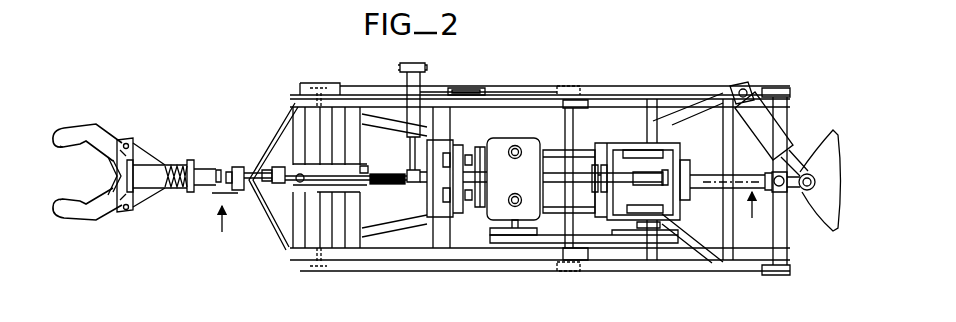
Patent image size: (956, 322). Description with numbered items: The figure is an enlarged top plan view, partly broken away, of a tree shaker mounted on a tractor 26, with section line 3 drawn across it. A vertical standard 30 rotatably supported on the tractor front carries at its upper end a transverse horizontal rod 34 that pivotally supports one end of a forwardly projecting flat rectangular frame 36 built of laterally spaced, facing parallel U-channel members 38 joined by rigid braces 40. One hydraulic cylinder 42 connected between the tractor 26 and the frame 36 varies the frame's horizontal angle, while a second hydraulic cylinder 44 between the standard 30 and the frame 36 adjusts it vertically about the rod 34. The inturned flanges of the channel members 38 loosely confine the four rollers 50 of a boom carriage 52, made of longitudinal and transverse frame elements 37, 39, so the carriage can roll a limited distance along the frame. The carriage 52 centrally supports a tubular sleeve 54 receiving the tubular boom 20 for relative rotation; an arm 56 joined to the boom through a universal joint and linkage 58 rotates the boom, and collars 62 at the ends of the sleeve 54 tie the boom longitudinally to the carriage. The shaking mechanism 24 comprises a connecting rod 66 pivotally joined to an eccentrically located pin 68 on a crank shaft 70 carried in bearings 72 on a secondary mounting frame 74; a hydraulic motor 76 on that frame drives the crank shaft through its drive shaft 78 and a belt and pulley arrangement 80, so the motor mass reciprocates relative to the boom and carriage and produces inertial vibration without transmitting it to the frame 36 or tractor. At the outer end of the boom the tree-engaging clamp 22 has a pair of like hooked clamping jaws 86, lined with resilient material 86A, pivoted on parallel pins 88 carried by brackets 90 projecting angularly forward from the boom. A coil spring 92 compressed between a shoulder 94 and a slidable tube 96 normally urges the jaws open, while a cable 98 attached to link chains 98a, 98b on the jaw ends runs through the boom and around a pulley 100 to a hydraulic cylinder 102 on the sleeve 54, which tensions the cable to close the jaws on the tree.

The section line 3- 3 is at (486, 212).
The boom 20 is at (163, 167).
The tree-engaging clamp 22 is at (123, 118).
The shaking mechanism 24 is at (548, 137).
The tractor 26 is at (834, 133).
The vertical standard 30 is at (781, 191).
The transverse horizontal rod 34 is at (782, 237).
The frame 36 is at (624, 92).
The longitudinal frame elements 37 is at (383, 103).
The U-channel members 38 is at (668, 90).
The transverse frame elements 39 is at (355, 107).
The rigid braces 40 is at (716, 124).
The hydraulic cylinder 42 is at (752, 92).
The second hydraulic cylinder 44 is at (690, 170).
The wheels or rollers 50 is at (313, 83).
The boom carriage 52 is at (272, 244).
The tubular sleeve 54 is at (283, 166).
The arm 56 is at (413, 183).
The linkage 58 is at (415, 82).
The collars 62 is at (238, 165).
The connecting rod 66 is at (592, 178).
The eccentrically located pin 68 is at (653, 188).
The crank shaft 70 is at (668, 183).
The bearings 72 is at (641, 150).
The secondary mounting frame 74 is at (604, 150).
The hydraulic motor 76 is at (525, 184).
The drive shaft 78 is at (490, 232).
The belt and pulley arrangement 80 is at (538, 246).
The clamping jaws 86 is at (78, 126).
The resilient material 86A is at (90, 198).
The parallel pins 88 is at (121, 214).
The brackets 90 is at (150, 160).
The coil spring 92 is at (178, 188).
The shoulder 94 is at (192, 193).
The slidable tube 96 is at (133, 182).
The cable 98 is at (219, 170).
The link chain 98a is at (122, 150).
The link chain 98b is at (112, 206).
The pulley 100 is at (385, 186).
The hydraulic cylinder 102 is at (257, 183).